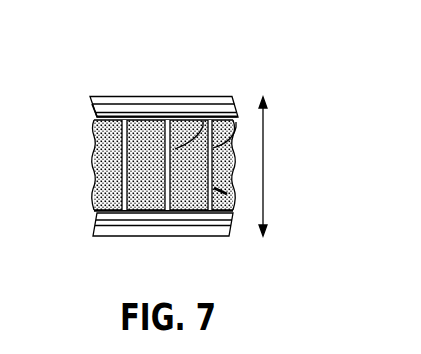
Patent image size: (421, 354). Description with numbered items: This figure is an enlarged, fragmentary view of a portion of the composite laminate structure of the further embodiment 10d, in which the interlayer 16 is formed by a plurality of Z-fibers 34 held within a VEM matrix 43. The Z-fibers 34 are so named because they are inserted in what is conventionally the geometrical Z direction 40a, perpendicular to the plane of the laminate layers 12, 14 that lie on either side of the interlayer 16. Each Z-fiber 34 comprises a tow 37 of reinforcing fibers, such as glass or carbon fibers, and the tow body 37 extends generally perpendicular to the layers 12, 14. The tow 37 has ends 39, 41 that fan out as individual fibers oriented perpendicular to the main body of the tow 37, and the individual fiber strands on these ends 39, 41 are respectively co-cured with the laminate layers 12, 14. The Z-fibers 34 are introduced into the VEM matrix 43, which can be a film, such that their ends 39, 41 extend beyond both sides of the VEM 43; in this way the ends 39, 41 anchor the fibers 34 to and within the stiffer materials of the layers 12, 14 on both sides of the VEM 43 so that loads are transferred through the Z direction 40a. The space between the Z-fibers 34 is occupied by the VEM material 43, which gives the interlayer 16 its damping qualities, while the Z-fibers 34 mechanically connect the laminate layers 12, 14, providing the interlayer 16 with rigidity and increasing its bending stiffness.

The further embodiment 10d is at (206, 62).
The laminate layer 12 is at (112, 99).
The laminate layer 14 is at (112, 234).
The interlayer 16 is at (89, 120).
The Z-fibers 34 is at (224, 194).
The tow 37 is at (203, 121).
The end 39 is at (169, 121).
The end 41 is at (158, 212).
The VEM matrix 43 is at (101, 111).
The Z direction 40a is at (265, 166).